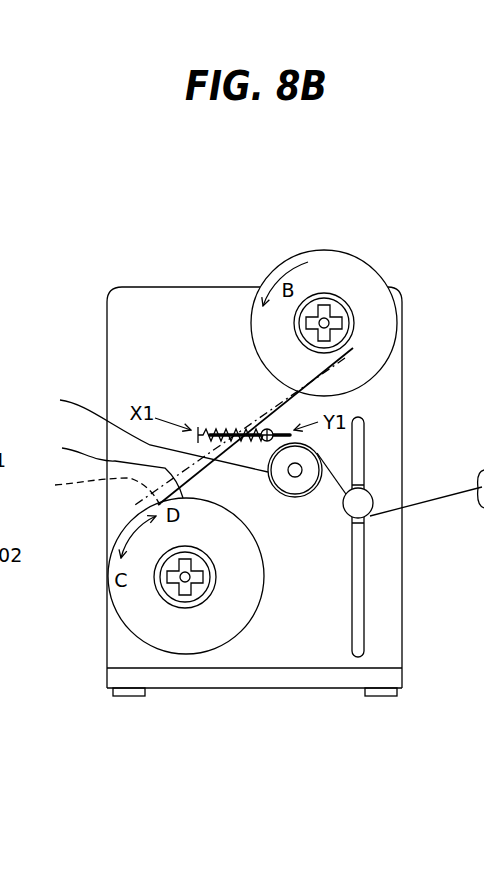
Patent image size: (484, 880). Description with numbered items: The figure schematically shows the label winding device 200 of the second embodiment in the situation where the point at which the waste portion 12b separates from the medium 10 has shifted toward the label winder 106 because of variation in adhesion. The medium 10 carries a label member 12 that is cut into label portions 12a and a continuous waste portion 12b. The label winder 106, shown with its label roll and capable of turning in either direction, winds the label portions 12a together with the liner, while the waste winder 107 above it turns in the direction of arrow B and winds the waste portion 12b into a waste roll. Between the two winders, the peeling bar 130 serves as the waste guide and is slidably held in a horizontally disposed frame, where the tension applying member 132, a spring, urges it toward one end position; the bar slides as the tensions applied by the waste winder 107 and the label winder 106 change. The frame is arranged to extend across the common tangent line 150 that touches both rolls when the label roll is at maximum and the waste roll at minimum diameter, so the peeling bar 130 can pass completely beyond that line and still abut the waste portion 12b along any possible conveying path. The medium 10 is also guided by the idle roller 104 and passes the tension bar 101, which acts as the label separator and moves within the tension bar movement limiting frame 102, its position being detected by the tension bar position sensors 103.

The label winding device 200 is at (400, 252).
The waste winder 107 is at (323, 292).
The label winder 106 is at (162, 593).
The peeling bar 130 is at (267, 428).
The tension applying member 132 is at (200, 425).
The waste portion 12b is at (143, 431).
The label portions 12a is at (101, 468).
The common tangent line 150 is at (87, 490).
The idle roller 104 is at (285, 483).
The tension bar movement limiting frame 102 is at (353, 582).
The tension bar 101 is at (362, 498).
The tension bar position sensors 103 is at (349, 453).
The medium 10 is at (444, 496).
The label member 12 is at (478, 448).